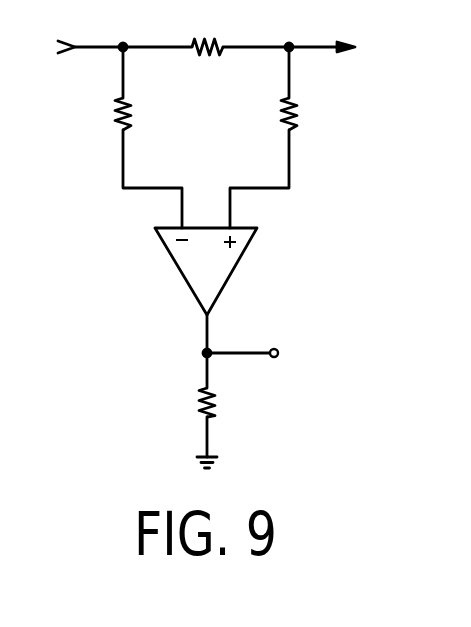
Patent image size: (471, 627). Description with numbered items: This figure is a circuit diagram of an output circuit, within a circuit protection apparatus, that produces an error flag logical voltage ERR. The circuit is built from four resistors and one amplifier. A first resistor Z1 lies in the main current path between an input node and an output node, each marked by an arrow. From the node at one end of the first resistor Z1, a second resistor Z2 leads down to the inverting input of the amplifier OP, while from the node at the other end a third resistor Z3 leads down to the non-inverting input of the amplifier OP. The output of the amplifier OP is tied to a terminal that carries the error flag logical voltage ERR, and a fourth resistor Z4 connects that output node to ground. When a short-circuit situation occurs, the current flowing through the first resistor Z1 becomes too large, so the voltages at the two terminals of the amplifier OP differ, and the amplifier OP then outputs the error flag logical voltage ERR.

The first resistor Z1 is at (207, 33).
The second resistor Z2 is at (138, 114).
The third resistor Z3 is at (303, 114).
The fourth resistor Z4 is at (222, 402).
The first amplifier OP is at (206, 271).
The error flag logical voltage ERR is at (296, 353).